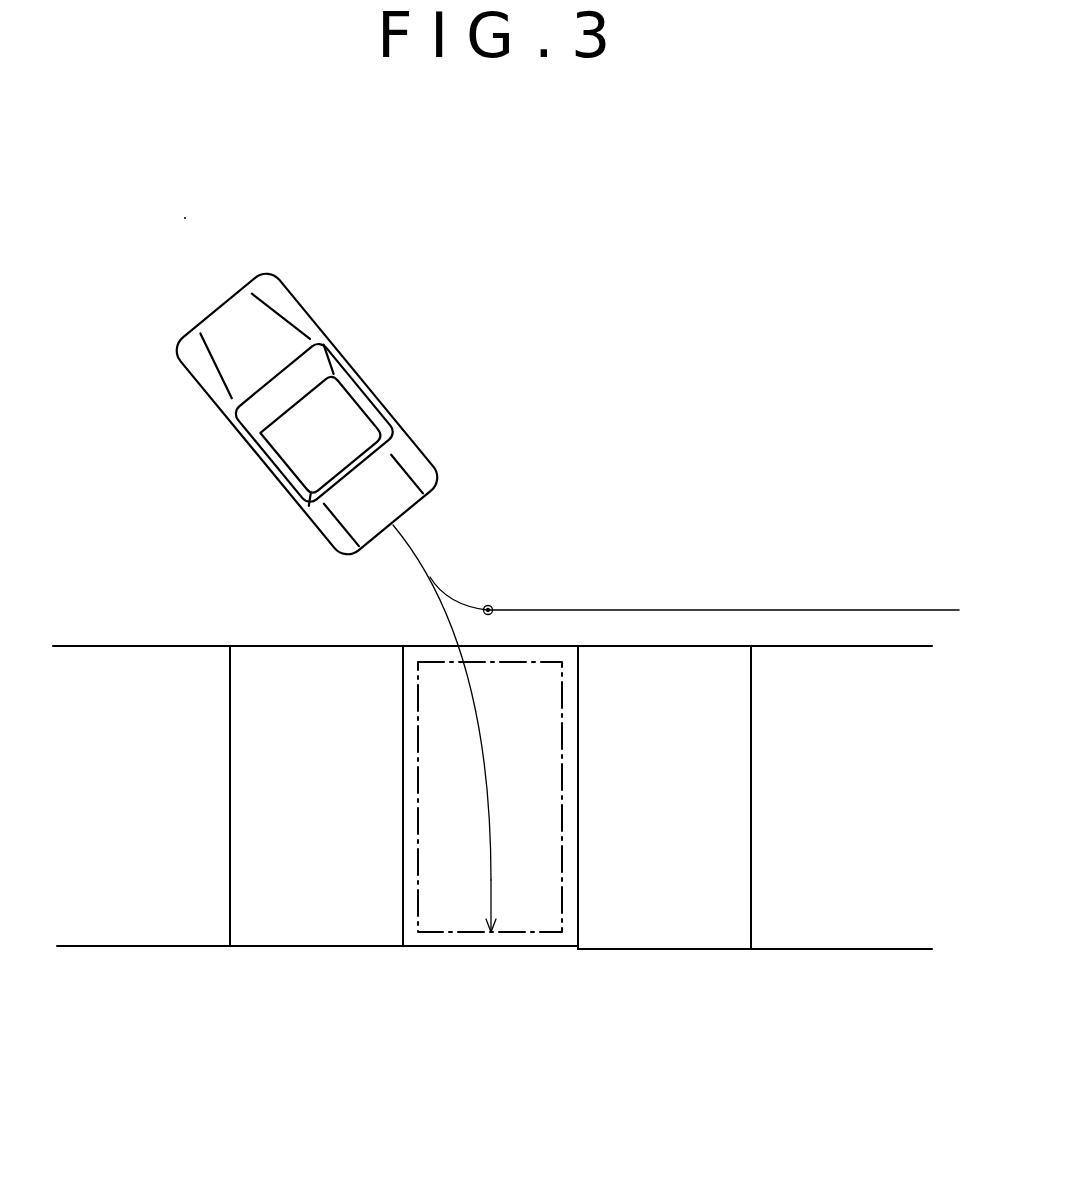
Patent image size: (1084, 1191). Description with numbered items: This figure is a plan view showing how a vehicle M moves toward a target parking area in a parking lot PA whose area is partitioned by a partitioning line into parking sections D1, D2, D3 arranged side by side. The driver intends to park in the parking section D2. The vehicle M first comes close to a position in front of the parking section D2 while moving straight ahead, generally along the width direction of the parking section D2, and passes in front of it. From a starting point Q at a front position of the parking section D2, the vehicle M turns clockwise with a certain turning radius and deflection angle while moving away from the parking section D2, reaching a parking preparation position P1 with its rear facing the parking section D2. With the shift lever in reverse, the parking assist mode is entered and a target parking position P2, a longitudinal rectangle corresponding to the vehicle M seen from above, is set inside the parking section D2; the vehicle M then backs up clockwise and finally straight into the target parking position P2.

The vehicle M is at (260, 468).
The parking preparation position P1 is at (311, 414).
The target parking position P2 is at (565, 780).
The parking lot PA is at (810, 578).
The starting point Q is at (489, 605).
The parking section D1 is at (368, 948).
The parking section D2 is at (528, 950).
The parking section D3 is at (685, 952).